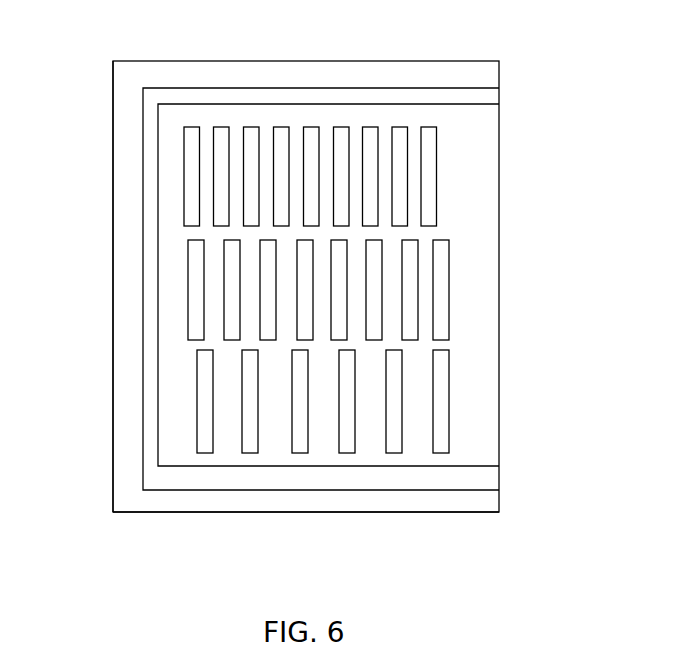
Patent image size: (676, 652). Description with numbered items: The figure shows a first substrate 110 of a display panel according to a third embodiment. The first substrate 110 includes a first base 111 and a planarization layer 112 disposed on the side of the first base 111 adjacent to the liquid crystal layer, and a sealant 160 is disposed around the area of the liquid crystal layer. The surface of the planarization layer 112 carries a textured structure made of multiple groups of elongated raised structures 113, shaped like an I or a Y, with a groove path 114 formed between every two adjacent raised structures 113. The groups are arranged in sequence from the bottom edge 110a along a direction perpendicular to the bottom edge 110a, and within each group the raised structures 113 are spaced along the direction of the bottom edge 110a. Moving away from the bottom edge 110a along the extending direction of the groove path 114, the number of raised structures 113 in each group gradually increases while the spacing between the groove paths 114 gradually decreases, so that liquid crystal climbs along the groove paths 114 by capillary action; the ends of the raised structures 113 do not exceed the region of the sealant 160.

The first substrate 110 is at (332, 43).
The bottom edge 110a is at (438, 512).
The first base 111 is at (128, 214).
The planarization layer 112 is at (475, 137).
The raised structures 113 is at (425, 186).
The groove path 114 is at (416, 203).
The sealant 160 is at (486, 94).